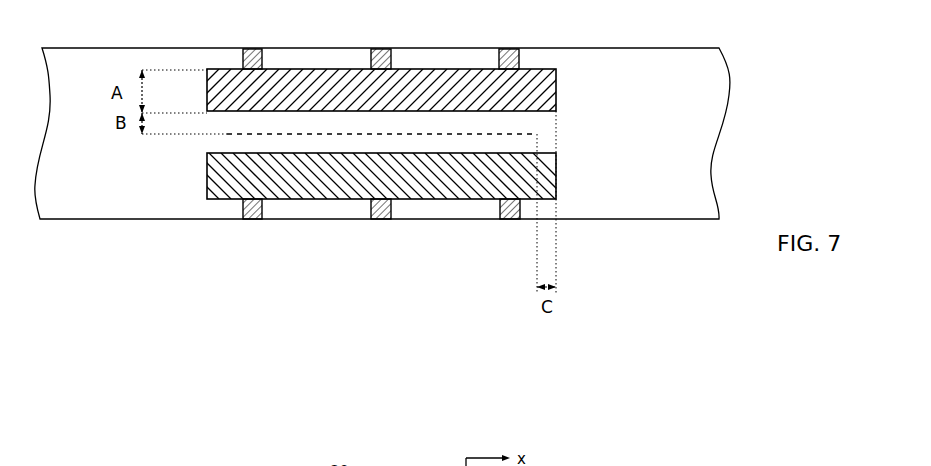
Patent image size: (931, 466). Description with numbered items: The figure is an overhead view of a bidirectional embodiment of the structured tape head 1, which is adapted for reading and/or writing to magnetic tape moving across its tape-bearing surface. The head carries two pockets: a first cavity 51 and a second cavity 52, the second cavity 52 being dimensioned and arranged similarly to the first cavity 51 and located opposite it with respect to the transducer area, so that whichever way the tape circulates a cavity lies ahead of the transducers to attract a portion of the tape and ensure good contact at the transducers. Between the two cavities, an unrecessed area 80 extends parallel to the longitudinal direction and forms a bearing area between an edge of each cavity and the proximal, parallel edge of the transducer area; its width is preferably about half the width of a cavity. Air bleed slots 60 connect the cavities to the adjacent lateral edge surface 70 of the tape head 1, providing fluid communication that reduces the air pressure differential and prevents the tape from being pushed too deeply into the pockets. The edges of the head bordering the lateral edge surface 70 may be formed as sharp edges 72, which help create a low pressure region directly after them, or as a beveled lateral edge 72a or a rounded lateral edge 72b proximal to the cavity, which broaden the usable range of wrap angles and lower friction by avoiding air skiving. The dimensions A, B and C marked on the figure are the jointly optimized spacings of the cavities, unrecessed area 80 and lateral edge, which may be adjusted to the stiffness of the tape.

The tape head 1 is at (215, 260).
The first cavity 51 is at (561, 72).
The second cavity 52 is at (548, 168).
The air bleed slots 60 is at (497, 57).
The lateral edge surface 70 is at (382, 129).
The sharp edges 72 is at (382, 133).
The beveled lateral edge 72a is at (382, 133).
The rounded lateral edge 72b is at (540, 47).
The unrecessed area 80 is at (243, 140).